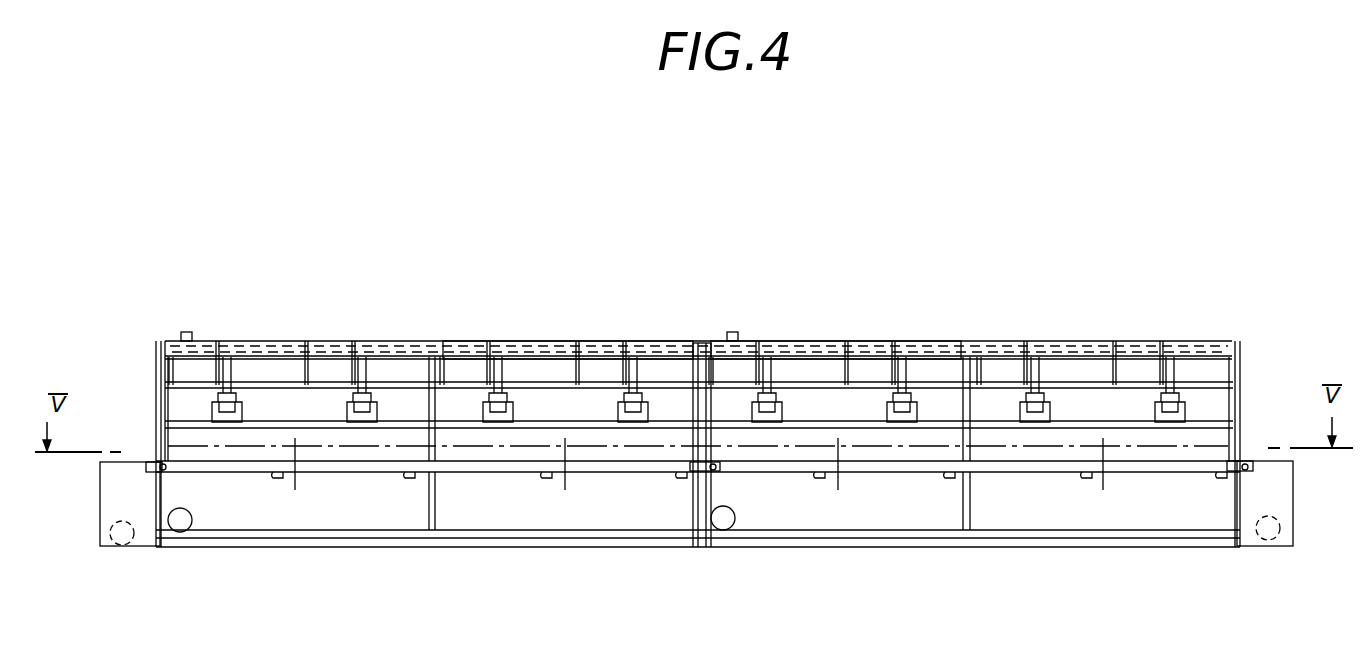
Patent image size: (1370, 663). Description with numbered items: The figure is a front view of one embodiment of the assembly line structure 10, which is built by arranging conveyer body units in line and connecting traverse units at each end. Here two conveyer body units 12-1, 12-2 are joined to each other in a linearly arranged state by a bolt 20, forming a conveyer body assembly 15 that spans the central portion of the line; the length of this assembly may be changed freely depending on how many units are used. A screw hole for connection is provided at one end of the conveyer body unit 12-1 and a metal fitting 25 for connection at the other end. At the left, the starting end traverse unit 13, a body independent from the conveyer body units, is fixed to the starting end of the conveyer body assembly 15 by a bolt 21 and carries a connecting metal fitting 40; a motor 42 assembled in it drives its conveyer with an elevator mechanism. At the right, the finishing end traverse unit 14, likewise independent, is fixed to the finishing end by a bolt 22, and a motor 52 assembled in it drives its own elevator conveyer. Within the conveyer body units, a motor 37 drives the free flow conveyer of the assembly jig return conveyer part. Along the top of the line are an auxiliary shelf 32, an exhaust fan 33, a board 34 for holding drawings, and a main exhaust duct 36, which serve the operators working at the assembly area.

The assembly line structure 10 is at (1112, 230).
The conveyer body assembly 15 is at (152, 272).
The conveyer body unit 12-1 is at (547, 340).
The conveyer body unit 12-2 is at (808, 340).
The main exhaust duct 36 is at (180, 336).
The board for holding drawings 34 is at (305, 362).
The exhaust fan 33 is at (356, 404).
The auxiliary shelf 32 is at (175, 420).
The bolt 21 is at (160, 465).
The connecting metal fitting 40 is at (178, 470).
The metal fitting for connection 25 is at (1237, 462).
The bolt 22 is at (1248, 462).
The bolt 20 is at (712, 470).
The starting end traverse unit 13 is at (97, 497).
The finishing end traverse unit 14 is at (1299, 497).
The motor 37 is at (190, 533).
The motor 42 is at (116, 546).
The motor 52 is at (1263, 543).